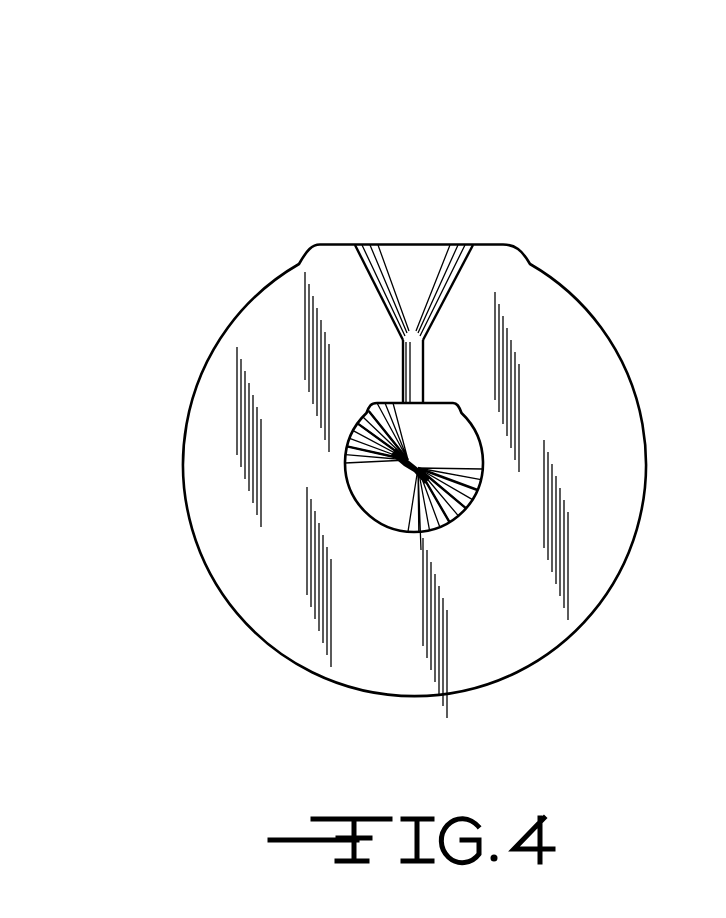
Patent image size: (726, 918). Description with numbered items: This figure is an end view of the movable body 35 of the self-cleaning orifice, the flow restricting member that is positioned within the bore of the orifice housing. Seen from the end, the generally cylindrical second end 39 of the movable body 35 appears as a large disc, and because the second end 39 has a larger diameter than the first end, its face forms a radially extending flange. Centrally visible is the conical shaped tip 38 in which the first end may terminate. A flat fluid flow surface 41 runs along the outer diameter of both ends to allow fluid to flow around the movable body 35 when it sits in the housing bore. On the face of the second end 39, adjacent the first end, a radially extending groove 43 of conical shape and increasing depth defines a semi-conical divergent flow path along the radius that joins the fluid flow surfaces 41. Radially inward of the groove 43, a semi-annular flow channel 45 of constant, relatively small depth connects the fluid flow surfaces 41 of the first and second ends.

The movable body 35 is at (317, 170).
The conical shaped tip 38 is at (455, 503).
The second end 39 is at (212, 578).
The fluid flow surface 41 is at (370, 247).
The groove 43 is at (410, 265).
The flow channel 45 is at (410, 373).